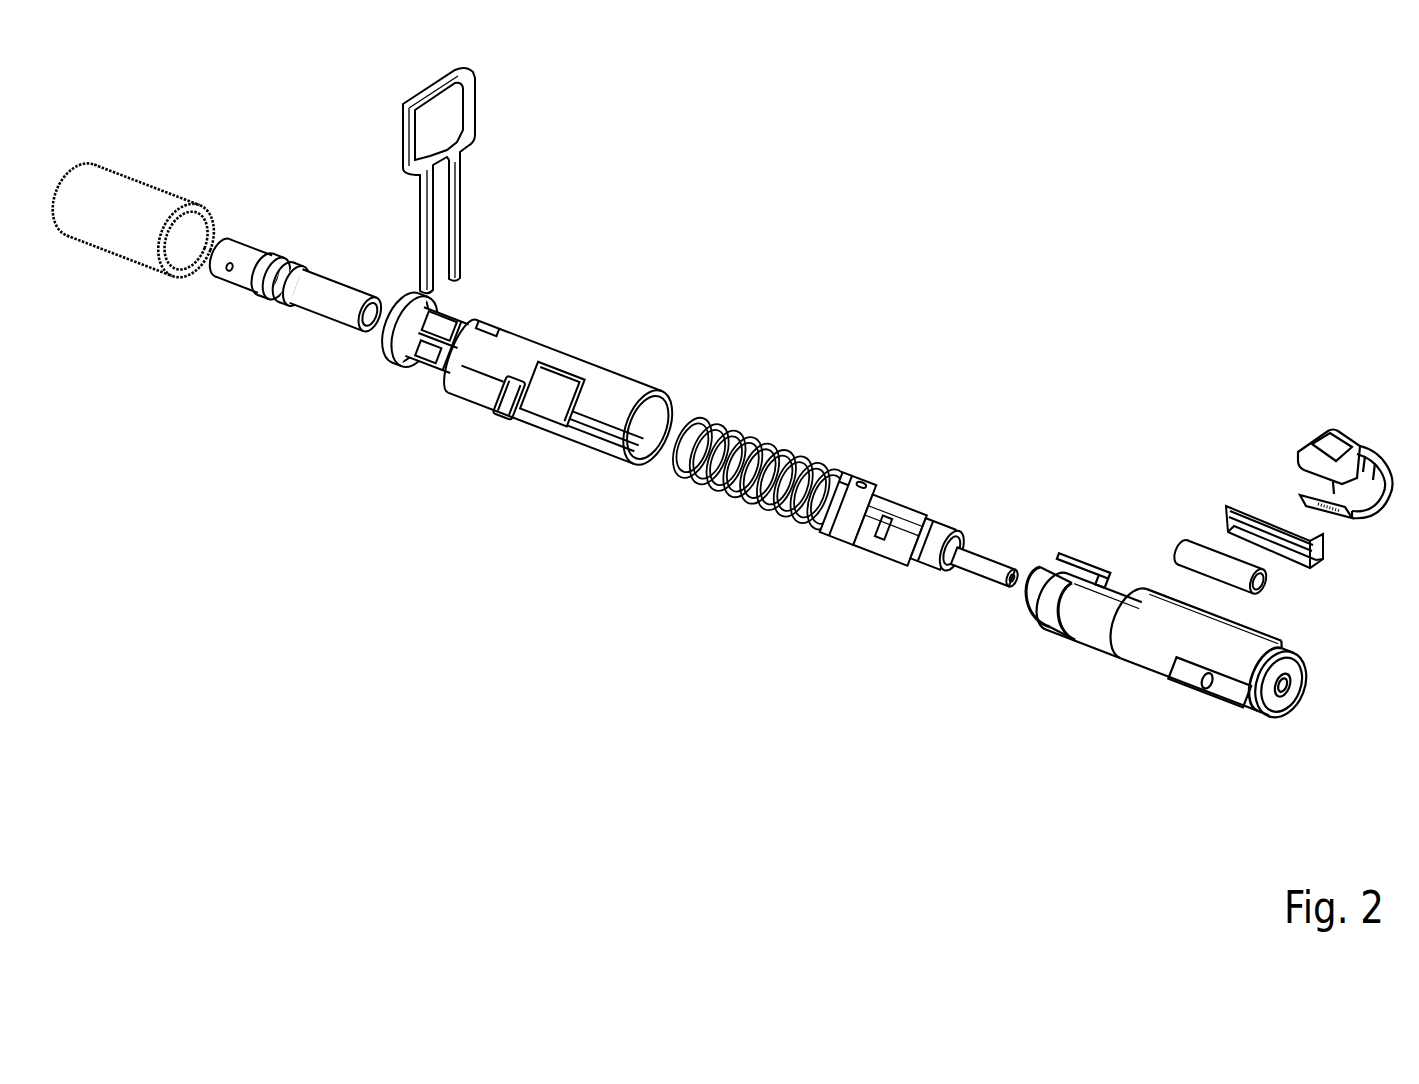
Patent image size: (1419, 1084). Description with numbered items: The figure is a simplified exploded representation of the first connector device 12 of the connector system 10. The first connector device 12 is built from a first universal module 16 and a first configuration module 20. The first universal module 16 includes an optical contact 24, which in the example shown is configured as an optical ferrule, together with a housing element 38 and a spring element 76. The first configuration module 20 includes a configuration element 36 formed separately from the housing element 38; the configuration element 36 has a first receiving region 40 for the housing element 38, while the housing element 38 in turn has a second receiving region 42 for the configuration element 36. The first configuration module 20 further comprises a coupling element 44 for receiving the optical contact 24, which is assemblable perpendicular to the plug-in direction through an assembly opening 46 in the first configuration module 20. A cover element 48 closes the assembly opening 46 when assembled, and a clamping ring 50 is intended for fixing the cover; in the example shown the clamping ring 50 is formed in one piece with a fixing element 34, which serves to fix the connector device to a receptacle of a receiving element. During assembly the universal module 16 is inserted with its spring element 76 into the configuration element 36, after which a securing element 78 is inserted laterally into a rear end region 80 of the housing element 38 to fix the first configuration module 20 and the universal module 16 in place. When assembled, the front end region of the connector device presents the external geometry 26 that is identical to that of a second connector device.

The connector system 10 is at (730, 441).
The first connector device 12 is at (928, 585).
The first universal module 16 is at (832, 542).
The first configuration module 20 is at (1050, 610).
The optical contact 24 is at (988, 566).
The external geometries 26 is at (1307, 716).
The fixing element 34 is at (1353, 458).
The configuration element 36 is at (1152, 650).
The housing element 38 is at (487, 361).
The first receiving region 40 is at (1121, 681).
The second receiving region 42 is at (548, 395).
The coupling element 44 is at (1193, 553).
The assembly opening 46 is at (1204, 671).
The cover element 48 is at (1249, 512).
The clamping ring 50 is at (1310, 446).
The spring element 76 is at (688, 460).
The securing element 78 is at (408, 134).
The rear end region 80 is at (373, 360).